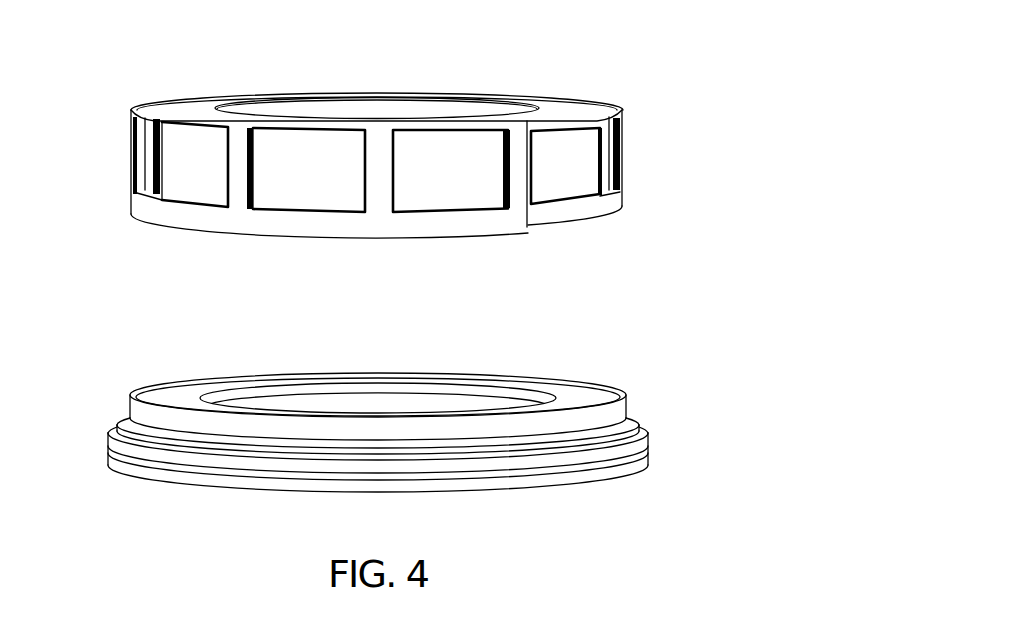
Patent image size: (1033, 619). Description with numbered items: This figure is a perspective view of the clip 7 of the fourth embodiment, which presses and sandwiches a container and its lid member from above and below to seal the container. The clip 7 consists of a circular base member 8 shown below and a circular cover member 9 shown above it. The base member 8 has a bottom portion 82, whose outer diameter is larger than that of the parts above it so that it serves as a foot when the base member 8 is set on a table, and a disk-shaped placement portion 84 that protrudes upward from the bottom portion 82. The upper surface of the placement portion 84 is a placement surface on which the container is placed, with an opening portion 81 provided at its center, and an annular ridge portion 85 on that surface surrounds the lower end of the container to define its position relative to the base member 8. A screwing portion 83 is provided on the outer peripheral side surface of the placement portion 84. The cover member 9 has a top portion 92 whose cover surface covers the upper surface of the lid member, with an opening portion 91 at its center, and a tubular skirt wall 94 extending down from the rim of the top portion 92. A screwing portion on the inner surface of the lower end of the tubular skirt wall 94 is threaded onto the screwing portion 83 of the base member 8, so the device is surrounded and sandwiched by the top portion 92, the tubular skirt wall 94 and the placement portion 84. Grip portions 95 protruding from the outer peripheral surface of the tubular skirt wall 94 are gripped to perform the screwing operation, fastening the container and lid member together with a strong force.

The clip 7 is at (758, 143).
The base member 8 is at (673, 411).
The cover member 9 is at (667, 147).
The opening portion 81 is at (450, 428).
The bottom portion 82 is at (607, 472).
The screwing portion 83 is at (108, 434).
The placement portion 84 is at (180, 407).
The ridge portion 85 is at (592, 402).
The opening portion 91 is at (414, 83).
The top portion 92 is at (172, 107).
The tubular skirt wall 94 is at (132, 160).
The grip portion 95 is at (622, 117).